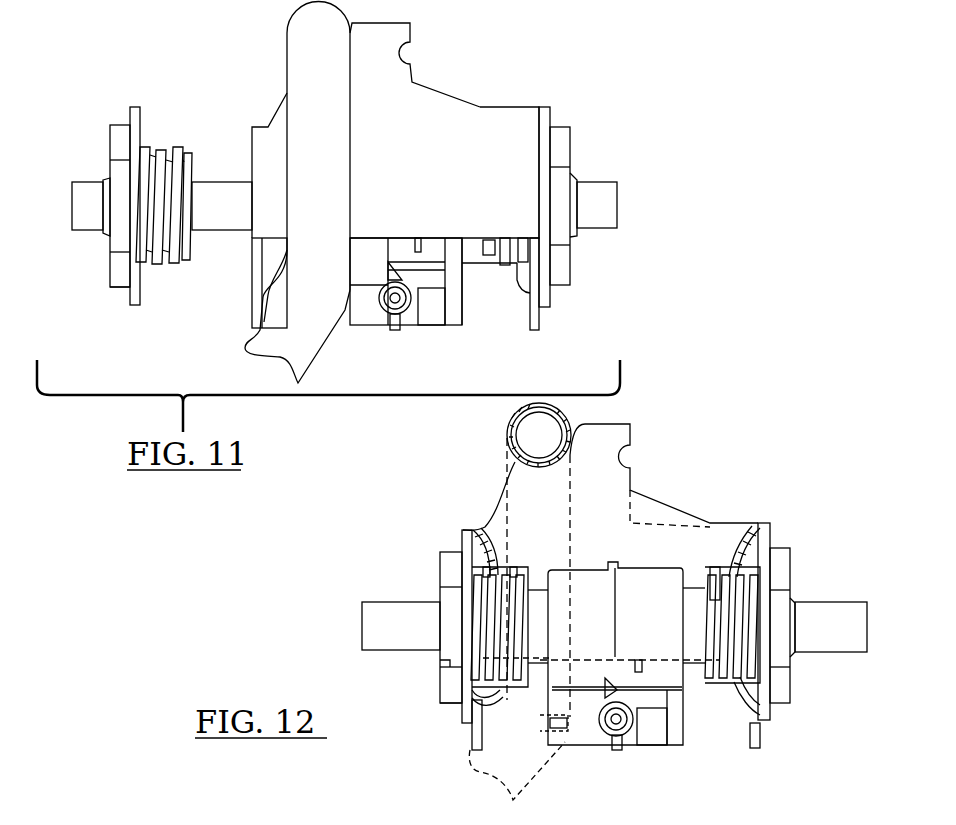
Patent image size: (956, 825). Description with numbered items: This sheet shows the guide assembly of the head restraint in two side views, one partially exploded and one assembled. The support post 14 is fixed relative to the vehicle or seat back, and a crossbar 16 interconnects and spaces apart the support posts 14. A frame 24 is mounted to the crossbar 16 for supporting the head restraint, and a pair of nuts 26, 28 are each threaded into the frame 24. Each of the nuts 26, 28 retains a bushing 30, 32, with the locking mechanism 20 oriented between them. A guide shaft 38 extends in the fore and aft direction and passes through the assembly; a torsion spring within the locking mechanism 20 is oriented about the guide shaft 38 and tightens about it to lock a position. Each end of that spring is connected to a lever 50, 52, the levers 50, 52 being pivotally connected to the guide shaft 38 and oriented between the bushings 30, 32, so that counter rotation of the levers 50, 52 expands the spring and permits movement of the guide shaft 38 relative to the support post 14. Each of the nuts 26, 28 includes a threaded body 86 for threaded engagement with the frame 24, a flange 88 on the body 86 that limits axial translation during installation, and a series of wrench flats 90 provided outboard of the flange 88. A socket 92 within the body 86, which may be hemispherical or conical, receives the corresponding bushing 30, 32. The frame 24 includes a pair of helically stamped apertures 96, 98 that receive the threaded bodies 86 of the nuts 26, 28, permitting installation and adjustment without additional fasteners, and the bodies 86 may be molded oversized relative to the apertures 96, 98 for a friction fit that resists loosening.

In FIG. 11, the support post 14 is at (270, 338).
In FIG. 12, the support post 14 is at (470, 768).
In FIG. 11, the crossbar 16 is at (305, 27).
In FIG. 12, the crossbar 16 is at (505, 440).
In FIG. 11, the locking mechanism 20 is at (405, 333).
In FIG. 12, the locking mechanism 20 is at (618, 766).
In FIG. 11, the frame 24 is at (470, 140).
In FIG. 12, the frame 24 is at (647, 515).
In FIG. 11, the nut 26 is at (112, 120).
In FIG. 12, the nut 26 is at (437, 557).
In FIG. 12, the nut 28 is at (795, 558).
In FIG. 11, the bushing 30 is at (103, 180).
In FIG. 12, the bushing 30 is at (450, 660).
In FIG. 11, the bushing 32 is at (578, 182).
In FIG. 12, the bushing 32 is at (793, 664).
In FIG. 11, the guide shaft 38 is at (218, 192).
In FIG. 12, the guide shaft 38 is at (375, 605).
In FIG. 11, the lever 50 is at (377, 328).
In FIG. 12, the lever 50 is at (595, 760).
In FIG. 11, the lever 52 is at (462, 287).
In FIG. 12, the lever 52 is at (683, 722).
In FIG. 11, the threaded body 86 is at (165, 268).
In FIG. 12, the threaded body 86 is at (510, 627).
In FIG. 11, the flange 88 is at (133, 307).
In FIG. 12, the flange 88 is at (466, 725).
In FIG. 11, the wrench flats 90 is at (118, 292).
In FIG. 12, the wrench flats 90 is at (447, 703).
In FIG. 12, the socket 92 is at (448, 597).
In FIG. 12, the helically stamped aperture 96 is at (477, 697).
In FIG. 12, the helically stamped aperture 98 is at (773, 690).